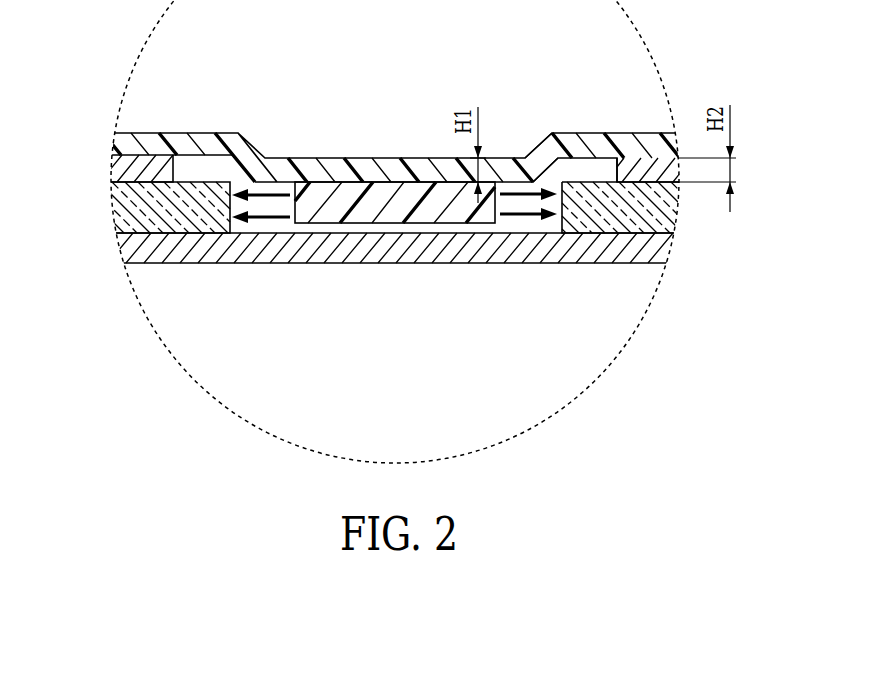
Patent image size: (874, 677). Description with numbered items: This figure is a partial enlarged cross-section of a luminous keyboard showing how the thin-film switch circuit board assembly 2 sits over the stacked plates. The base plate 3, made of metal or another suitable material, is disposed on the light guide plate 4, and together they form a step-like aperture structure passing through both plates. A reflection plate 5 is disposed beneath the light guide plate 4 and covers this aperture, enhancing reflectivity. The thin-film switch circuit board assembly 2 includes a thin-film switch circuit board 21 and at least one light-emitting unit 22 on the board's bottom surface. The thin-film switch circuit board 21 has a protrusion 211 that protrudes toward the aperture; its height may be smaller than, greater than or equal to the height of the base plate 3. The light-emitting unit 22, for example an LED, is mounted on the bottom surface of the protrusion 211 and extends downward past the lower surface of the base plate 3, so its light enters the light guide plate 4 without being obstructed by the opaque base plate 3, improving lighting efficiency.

The thin-film switch circuit board assembly 2 is at (337, 62).
The thin-film switch circuit board 21 is at (208, 143).
The protrusion 211 is at (553, 160).
The light-emitting unit 22 is at (318, 195).
The base plate 3 is at (112, 165).
The light guide plate 4 is at (113, 218).
The reflection plate 5 is at (347, 272).